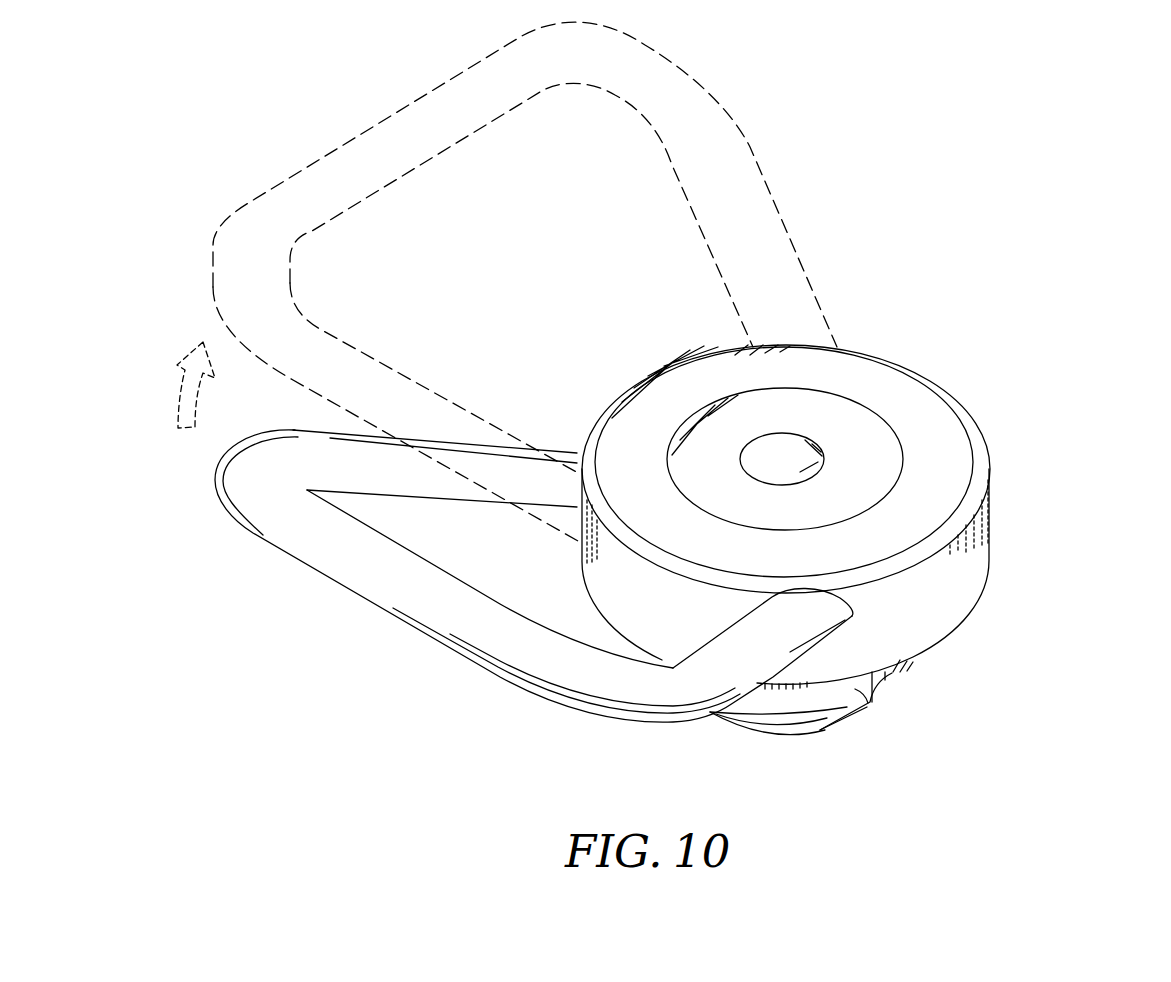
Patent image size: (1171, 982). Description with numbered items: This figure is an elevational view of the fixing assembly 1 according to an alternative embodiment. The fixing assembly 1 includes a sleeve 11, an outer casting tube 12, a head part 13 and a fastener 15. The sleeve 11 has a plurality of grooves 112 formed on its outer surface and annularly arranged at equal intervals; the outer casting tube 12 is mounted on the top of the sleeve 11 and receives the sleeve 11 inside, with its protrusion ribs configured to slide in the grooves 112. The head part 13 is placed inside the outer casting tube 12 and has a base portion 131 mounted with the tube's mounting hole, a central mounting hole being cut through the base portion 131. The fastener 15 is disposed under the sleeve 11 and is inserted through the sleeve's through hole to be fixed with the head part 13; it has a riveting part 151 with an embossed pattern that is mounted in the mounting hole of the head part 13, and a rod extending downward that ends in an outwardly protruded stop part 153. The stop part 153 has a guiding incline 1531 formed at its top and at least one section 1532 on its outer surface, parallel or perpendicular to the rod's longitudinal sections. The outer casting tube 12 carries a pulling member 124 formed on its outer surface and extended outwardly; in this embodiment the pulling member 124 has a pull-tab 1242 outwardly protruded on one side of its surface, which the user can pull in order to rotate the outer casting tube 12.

The fixing assembly 1 is at (997, 547).
The sleeve 11 is at (852, 692).
The grooves 112 is at (882, 675).
The outer casting tube 12 is at (952, 455).
The head part 13 is at (1062, 395).
The base portion 131 is at (867, 432).
The fastener 15 is at (950, 304).
The riveting part 151 is at (783, 460).
The stop part 153 is at (793, 733).
The guiding incline 1531 is at (768, 720).
The section 1532 is at (843, 713).
The pulling member 124 is at (311, 660).
The pull-tab 1242 is at (392, 582).